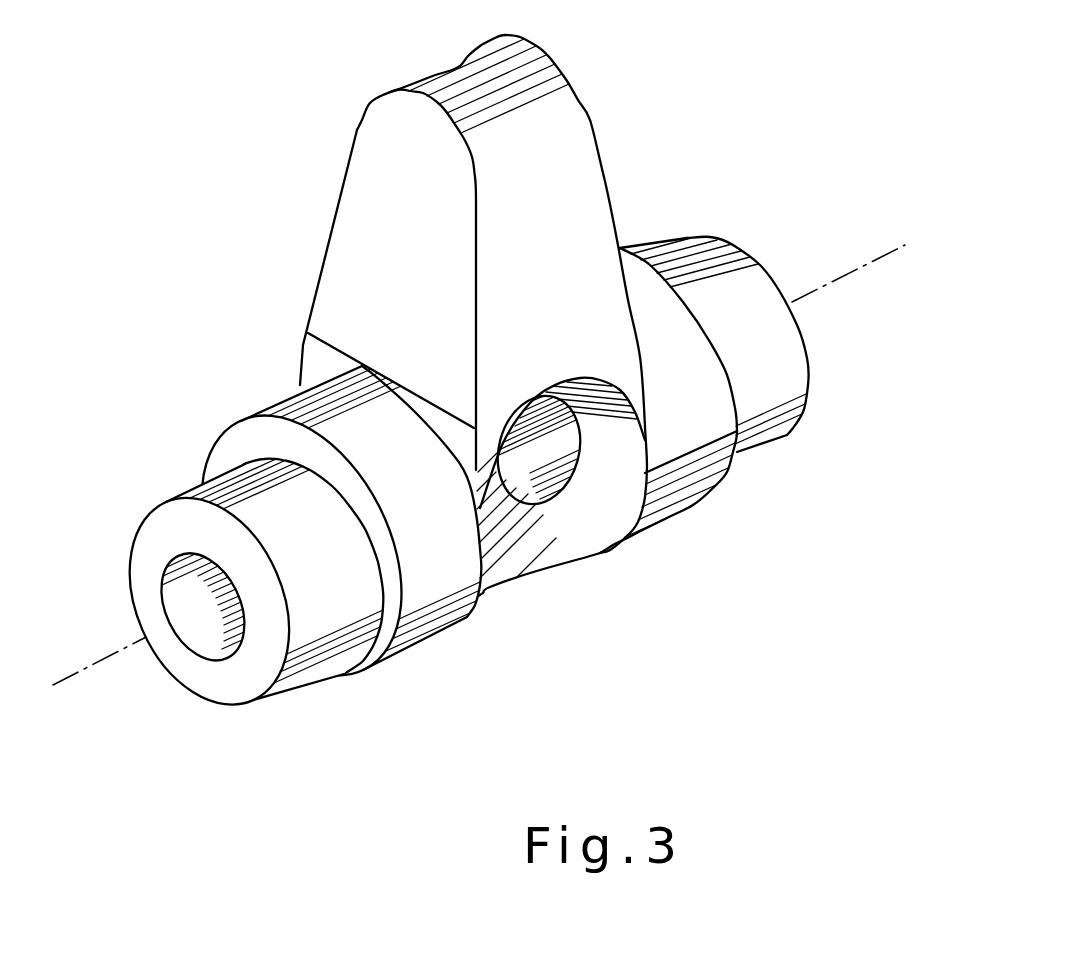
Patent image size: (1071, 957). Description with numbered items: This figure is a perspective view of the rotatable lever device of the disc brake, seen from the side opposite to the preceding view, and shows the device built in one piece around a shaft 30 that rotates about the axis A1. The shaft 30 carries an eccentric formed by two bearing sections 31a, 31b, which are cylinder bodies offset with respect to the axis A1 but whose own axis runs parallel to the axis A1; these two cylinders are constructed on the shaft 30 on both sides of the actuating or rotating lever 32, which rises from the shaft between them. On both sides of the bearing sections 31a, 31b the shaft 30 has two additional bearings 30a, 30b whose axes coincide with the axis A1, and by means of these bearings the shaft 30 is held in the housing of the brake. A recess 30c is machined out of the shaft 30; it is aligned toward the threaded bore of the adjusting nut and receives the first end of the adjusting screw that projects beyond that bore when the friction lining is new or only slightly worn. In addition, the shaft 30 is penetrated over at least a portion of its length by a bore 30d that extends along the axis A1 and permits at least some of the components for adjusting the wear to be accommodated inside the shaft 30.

The shaft 30 is at (243, 714).
The additional bearing 30a is at (770, 412).
The additional bearing 30b is at (320, 645).
The recess 30c is at (554, 520).
The bore 30d is at (183, 582).
The bearing section 31a is at (683, 467).
The bearing section 31b is at (437, 597).
The rotating lever 32 is at (577, 158).
The axis A1 is at (80, 674).